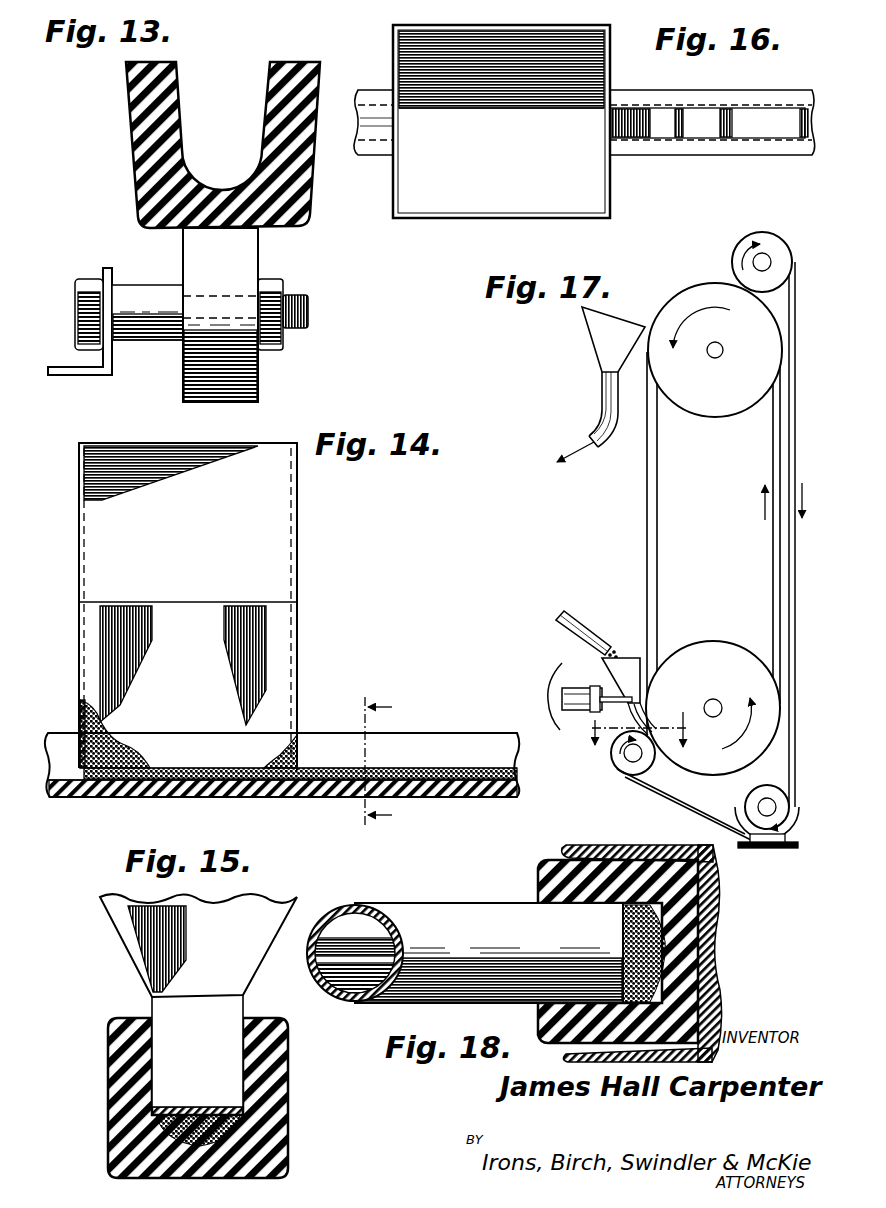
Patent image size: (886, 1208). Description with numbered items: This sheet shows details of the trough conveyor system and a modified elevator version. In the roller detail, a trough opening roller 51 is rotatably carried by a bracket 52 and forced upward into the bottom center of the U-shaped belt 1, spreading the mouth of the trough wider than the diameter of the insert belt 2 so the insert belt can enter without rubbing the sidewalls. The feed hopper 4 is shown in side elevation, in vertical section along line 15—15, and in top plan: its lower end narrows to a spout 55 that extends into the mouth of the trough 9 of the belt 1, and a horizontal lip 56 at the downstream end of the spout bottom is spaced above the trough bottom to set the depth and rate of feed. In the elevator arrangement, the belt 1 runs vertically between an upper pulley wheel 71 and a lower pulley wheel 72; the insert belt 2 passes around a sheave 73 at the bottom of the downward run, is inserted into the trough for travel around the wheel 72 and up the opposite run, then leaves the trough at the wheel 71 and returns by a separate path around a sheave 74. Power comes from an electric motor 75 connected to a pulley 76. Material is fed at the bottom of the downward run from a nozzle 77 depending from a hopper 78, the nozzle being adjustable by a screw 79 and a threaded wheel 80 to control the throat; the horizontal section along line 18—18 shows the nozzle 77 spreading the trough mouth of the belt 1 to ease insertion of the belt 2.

In FIG. 13, the belt 1 is at (137, 165).
In FIG. 16, the belt 1 is at (787, 90).
In FIG. 17, the belt 1 is at (657, 542).
In FIG. 14, the belt 1 is at (452, 788).
In FIG. 15, the belt 1 is at (280, 1134).
In FIG. 18, the belt 1 is at (546, 866).
In FIG. 17, the insert belt 2 is at (795, 312).
In FIG. 16, the feed hopper 4 is at (610, 197).
In FIG. 14, the feed hopper 4 is at (297, 534).
In FIG. 15, the feed hopper 4 is at (130, 938).
In FIG. 14, the trough 9 is at (398, 739).
In FIG. 15, the trough 9 is at (148, 1132).
In FIG. 14, the section line 15— 15 is at (377, 761).
In FIG. 17, the section line 18— 18 is at (646, 744).
In FIG. 13, the trough opening roller 51 is at (183, 362).
In FIG. 13, the bracket 52 is at (62, 367).
In FIG. 14, the spout 55 is at (222, 757).
In FIG. 15, the spout 55 is at (233, 998).
In FIG. 16, the horizontal lip 56 is at (735, 125).
In FIG. 14, the horizontal lip 56 is at (455, 775).
In FIG. 15, the horizontal lip 56 is at (203, 1106).
In FIG. 17, the pulley wheel 71 is at (720, 412).
In FIG. 17, the pulley wheel 72 is at (717, 642).
In FIG. 18, the pulley wheel 72 is at (605, 846).
In FIG. 17, the sheave 73 is at (626, 766).
In FIG. 17, the sheave 74 is at (783, 252).
In FIG. 17, the electric motor 75 is at (796, 813).
In FIG. 17, the pulley 76 is at (754, 800).
In FIG. 18, the nozzle 77 is at (452, 912).
In FIG. 17, the hopper 78 is at (633, 663).
In FIG. 17, the screw 79 is at (608, 697).
In FIG. 17, the threaded wheel 80 is at (594, 714).